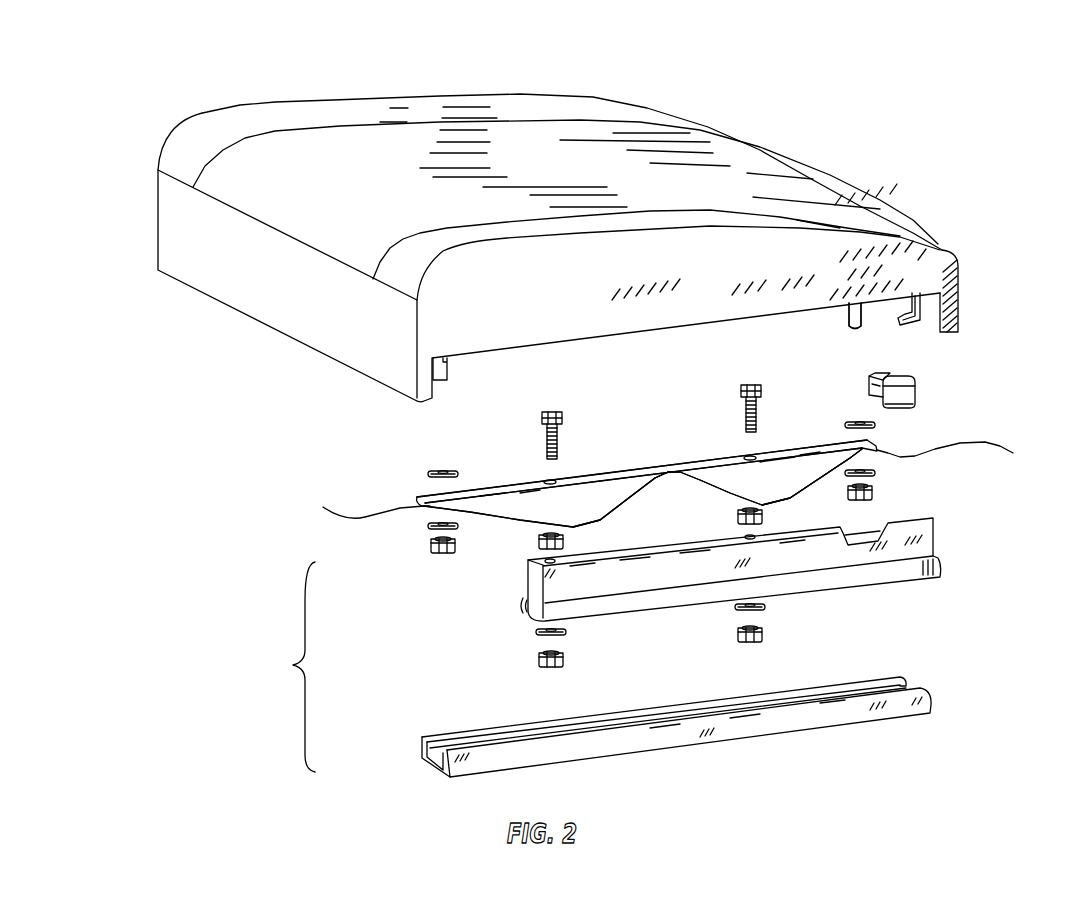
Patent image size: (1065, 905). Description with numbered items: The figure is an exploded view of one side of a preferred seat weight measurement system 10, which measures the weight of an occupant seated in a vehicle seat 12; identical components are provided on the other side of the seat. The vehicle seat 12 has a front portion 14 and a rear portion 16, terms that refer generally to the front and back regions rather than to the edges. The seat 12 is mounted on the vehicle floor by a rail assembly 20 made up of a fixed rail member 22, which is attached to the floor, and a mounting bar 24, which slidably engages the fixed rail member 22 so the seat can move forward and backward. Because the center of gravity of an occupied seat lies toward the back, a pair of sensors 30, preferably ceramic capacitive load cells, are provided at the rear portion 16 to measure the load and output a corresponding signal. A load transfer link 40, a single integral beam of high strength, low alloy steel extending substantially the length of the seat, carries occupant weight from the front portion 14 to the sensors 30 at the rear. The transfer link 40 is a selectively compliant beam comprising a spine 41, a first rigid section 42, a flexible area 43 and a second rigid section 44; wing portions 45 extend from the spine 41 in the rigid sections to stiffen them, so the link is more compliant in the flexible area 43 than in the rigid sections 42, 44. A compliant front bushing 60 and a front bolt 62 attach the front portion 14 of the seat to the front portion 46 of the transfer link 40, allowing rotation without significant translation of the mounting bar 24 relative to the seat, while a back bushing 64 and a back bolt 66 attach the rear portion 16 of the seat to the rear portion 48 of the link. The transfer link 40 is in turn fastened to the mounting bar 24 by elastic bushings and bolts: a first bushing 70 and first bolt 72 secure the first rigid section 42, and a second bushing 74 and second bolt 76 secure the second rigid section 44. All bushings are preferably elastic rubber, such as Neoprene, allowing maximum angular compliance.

The seat weight measurement system 10 is at (811, 103).
The vehicle seat 12 is at (775, 180).
The front portion 14 is at (248, 297).
The rear portion 16 is at (943, 260).
The rail assembly 20 is at (287, 667).
The fixed rail member 22 is at (422, 757).
The mounting bar 24 is at (935, 532).
The sensors 30 is at (917, 390).
The load transfer link 40 is at (418, 498).
The spine 41 is at (522, 480).
The first rigid section 42 is at (577, 470).
The flexible area 43 is at (667, 456).
The second rigid section 44 is at (782, 445).
The wing portions 45 is at (585, 507).
The front portion of the transfer link 46 is at (354, 511).
The rear portion of the transfer link 48 is at (960, 457).
The front bushing 60 is at (433, 473).
The front bolt 62 is at (448, 367).
The back bushing 64 is at (872, 425).
The back bolt 66 is at (847, 320).
The first bushing 70 is at (540, 543).
The first bolt 72 is at (553, 410).
The second bushing 74 is at (740, 515).
The second bolt 76 is at (743, 385).